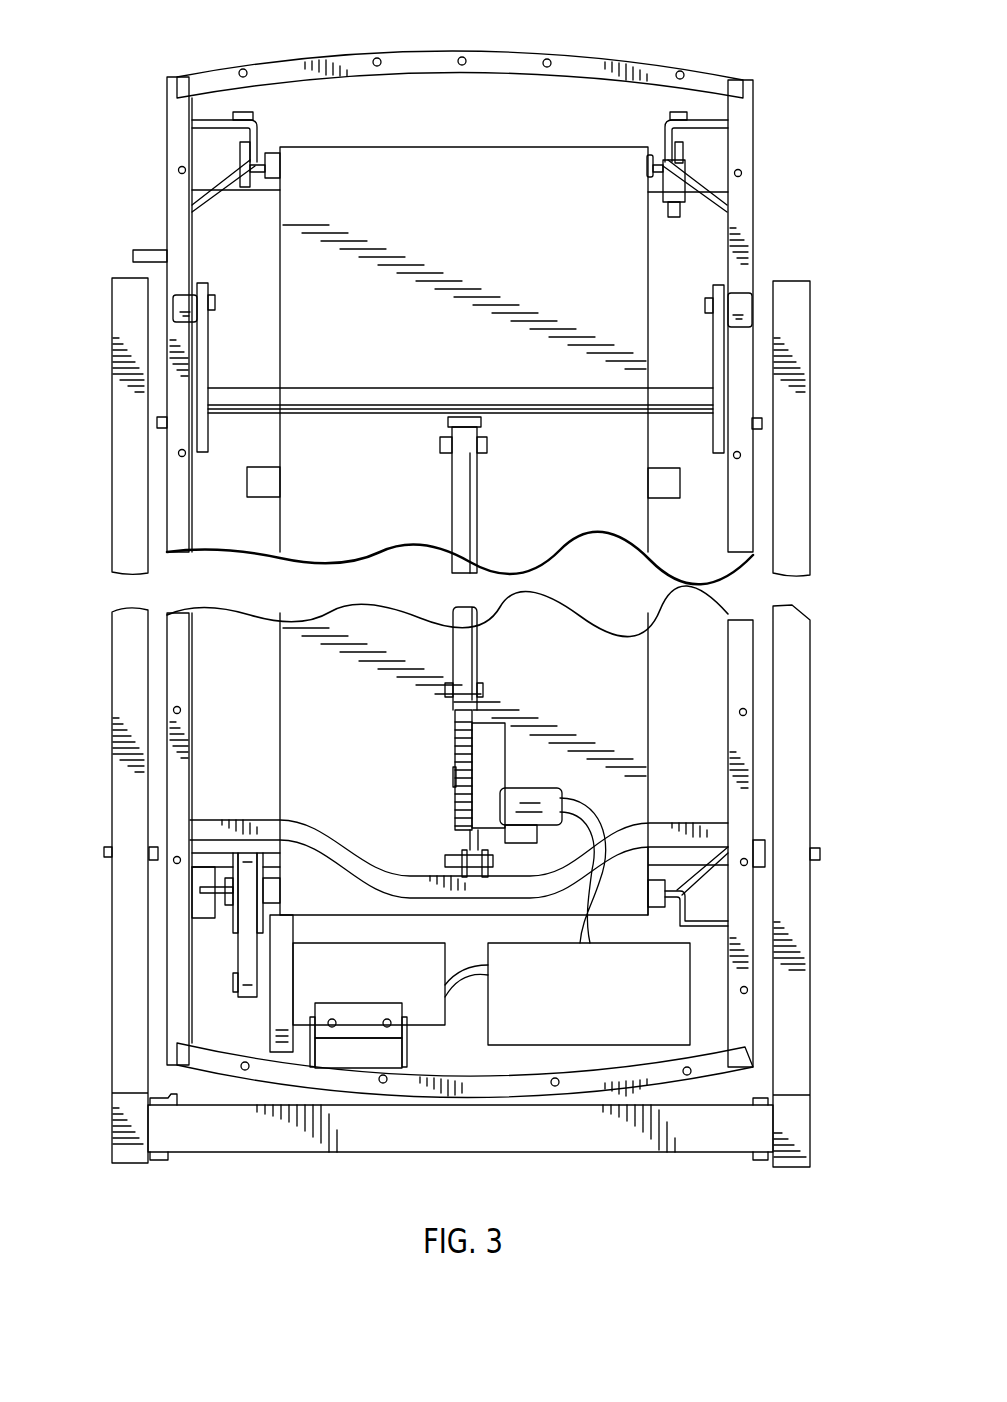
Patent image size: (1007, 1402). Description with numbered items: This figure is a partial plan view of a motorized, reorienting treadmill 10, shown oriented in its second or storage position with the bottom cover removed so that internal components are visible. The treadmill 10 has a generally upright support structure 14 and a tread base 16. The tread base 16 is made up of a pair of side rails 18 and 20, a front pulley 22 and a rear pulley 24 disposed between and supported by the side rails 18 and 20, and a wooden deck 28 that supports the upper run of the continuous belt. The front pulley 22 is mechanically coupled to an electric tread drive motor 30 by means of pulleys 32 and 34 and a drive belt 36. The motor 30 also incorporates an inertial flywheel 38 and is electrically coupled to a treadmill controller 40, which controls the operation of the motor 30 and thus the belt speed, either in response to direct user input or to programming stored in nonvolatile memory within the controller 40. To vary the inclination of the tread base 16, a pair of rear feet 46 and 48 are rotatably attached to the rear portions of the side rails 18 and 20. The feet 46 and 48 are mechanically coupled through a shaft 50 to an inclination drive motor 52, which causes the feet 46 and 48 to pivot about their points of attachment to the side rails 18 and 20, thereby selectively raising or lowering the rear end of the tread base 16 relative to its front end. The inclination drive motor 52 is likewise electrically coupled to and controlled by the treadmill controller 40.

The reorienting treadmill 10 is at (99, 172).
The upright support structure 14 is at (124, 435).
The tread base 16 is at (692, 258).
The side rail 18 is at (178, 669).
The side rail 20 is at (745, 658).
The front pulley 22 is at (657, 907).
The rear pulley 24 is at (651, 165).
The wooden deck 28 is at (212, 252).
The tread drive motor 30 is at (418, 993).
The pulley 32 is at (237, 982).
The pulley 34 is at (200, 890).
The drive belt 36 is at (245, 947).
The inertial flywheel 38 is at (273, 1020).
The treadmill controller 40 is at (577, 1010).
The rear foot 46 is at (203, 300).
The rear foot 48 is at (728, 300).
The shaft 50 is at (465, 538).
The inclination drive motor 52 is at (482, 794).